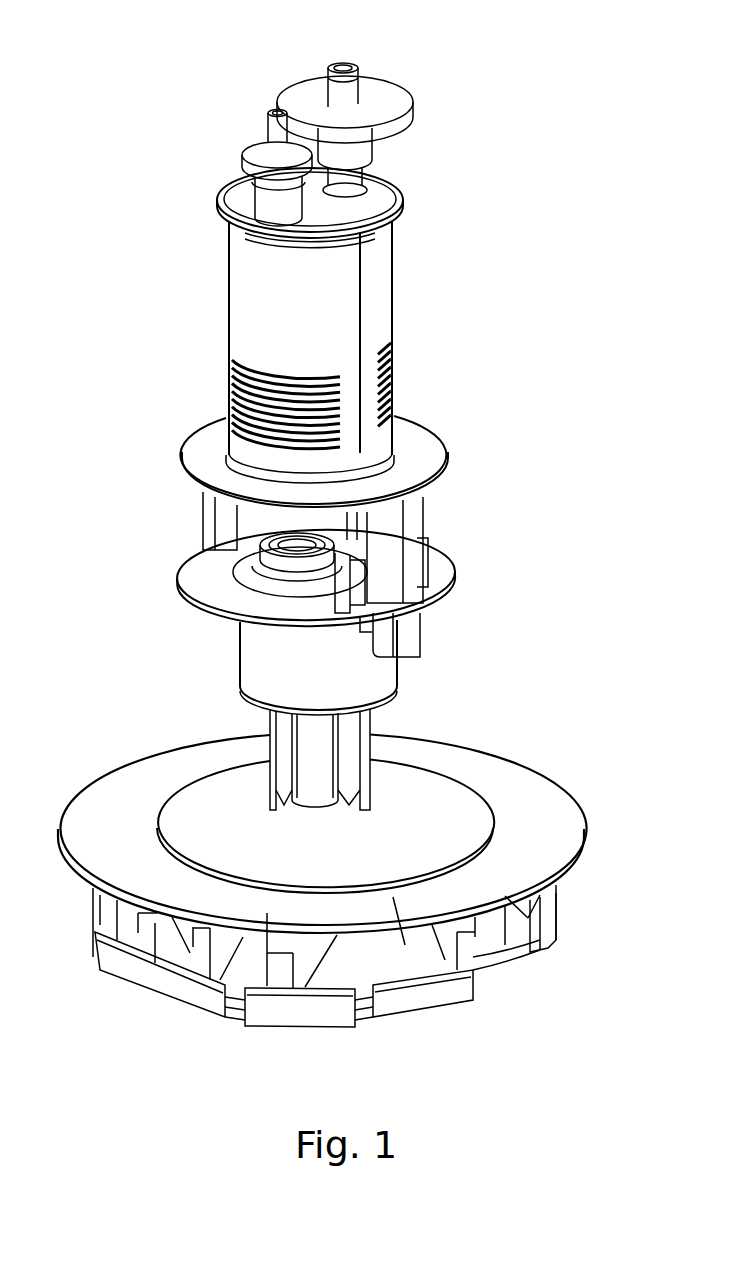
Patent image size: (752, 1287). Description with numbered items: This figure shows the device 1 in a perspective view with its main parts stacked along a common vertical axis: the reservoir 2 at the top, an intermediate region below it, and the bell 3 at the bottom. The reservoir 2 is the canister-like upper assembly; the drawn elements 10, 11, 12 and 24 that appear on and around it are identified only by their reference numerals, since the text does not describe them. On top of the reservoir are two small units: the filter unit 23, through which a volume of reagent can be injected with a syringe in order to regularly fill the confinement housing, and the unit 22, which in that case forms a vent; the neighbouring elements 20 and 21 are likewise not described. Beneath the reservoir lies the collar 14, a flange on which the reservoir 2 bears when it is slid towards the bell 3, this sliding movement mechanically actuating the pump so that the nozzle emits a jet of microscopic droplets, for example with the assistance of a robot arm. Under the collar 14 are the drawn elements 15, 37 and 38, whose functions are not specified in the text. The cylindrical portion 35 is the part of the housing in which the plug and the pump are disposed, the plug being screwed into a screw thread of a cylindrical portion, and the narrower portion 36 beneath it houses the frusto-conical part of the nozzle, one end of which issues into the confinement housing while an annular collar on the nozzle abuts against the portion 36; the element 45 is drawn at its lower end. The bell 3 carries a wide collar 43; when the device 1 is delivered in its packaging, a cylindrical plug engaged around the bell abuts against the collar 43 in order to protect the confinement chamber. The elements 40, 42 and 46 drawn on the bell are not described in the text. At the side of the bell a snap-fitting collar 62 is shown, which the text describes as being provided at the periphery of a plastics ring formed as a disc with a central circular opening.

The device 1 is at (126, 80).
The reservoir 2 is at (120, 322).
The bell 3 is at (530, 678).
The cartridge 10 is at (440, 269).
The cartridge cap 11 is at (362, 208).
The cartridge body 12 is at (380, 312).
The collar 14 is at (418, 450).
The support housing 15 is at (398, 522).
The connector 20 is at (265, 205).
The outlet stub 21 is at (378, 182).
The unit 22 is at (258, 150).
The filter unit 23 is at (302, 90).
The grooves 24 is at (258, 362).
The portion 35 is at (263, 670).
The portion 36 is at (322, 782).
The lower disc 37 is at (205, 574).
The tabs 38 is at (392, 612).
The inner ring 40 is at (445, 790).
The skirt tabs 42 is at (410, 968).
The collar 43 is at (548, 800).
The shaft tip 45 is at (346, 793).
The struts 46 is at (270, 950).
The snap-fitting collar 62 is at (553, 935).